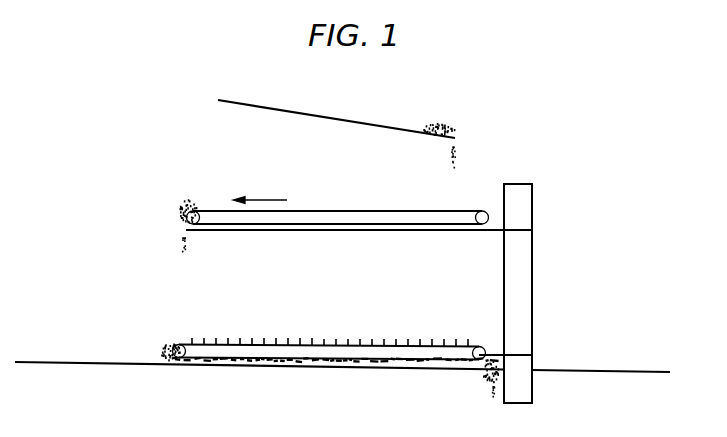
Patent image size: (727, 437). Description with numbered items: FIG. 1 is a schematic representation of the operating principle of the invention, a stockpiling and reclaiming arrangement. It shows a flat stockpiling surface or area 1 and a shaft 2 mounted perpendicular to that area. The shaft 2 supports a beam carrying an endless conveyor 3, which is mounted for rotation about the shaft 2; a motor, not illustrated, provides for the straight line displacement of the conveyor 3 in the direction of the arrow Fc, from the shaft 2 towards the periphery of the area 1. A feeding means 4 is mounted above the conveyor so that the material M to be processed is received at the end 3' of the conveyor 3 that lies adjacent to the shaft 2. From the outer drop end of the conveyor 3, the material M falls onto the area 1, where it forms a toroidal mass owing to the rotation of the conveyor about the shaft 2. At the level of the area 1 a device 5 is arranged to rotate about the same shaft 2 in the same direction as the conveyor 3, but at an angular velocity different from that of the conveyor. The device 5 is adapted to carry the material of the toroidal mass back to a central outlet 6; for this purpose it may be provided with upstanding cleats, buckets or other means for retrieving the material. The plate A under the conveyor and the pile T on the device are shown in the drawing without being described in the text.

The flat stockpiling surface 1 is at (585, 373).
The shaft 2 is at (528, 262).
The endless conveyor 3 is at (337, 200).
The end of the conveyor adjacent to the shaft 3' is at (477, 200).
The feeding means 4 is at (265, 107).
The device 5 is at (313, 345).
The central outlet 6 is at (490, 373).
The support plate A is at (325, 232).
The material M is at (178, 191).
The material pile on lower conveyor T is at (160, 352).
The arrow indicating straight line displacement of the conveyor Fc is at (260, 190).